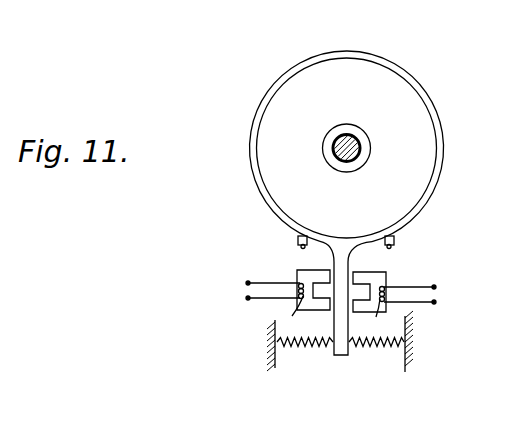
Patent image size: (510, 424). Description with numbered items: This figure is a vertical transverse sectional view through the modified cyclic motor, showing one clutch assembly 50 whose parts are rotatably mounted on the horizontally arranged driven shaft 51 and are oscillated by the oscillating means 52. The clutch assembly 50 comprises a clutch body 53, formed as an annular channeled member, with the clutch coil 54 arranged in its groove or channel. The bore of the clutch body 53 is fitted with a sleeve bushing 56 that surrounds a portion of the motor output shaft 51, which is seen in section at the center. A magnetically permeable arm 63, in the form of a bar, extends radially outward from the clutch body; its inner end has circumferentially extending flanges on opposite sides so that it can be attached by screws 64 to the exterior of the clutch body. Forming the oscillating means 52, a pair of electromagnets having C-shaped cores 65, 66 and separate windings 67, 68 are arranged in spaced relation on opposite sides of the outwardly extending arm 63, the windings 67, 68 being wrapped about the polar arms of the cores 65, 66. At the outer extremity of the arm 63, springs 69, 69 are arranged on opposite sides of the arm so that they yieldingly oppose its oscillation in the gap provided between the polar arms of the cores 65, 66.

The clutch assembly 50 is at (266, 86).
The driven shaft 51 is at (347, 153).
The oscillating means 52 is at (272, 311).
The clutch body 53 is at (397, 68).
The clutch coil 54 is at (334, 61).
The sleeve bushing 56 is at (345, 136).
The arm 63 is at (340, 356).
The screws 64 is at (297, 242).
The C-shaped core 65 is at (298, 272).
The C-shaped core 66 is at (384, 277).
The winding 67 is at (280, 307).
The winding 68 is at (406, 310).
The springs 69 is at (303, 353).